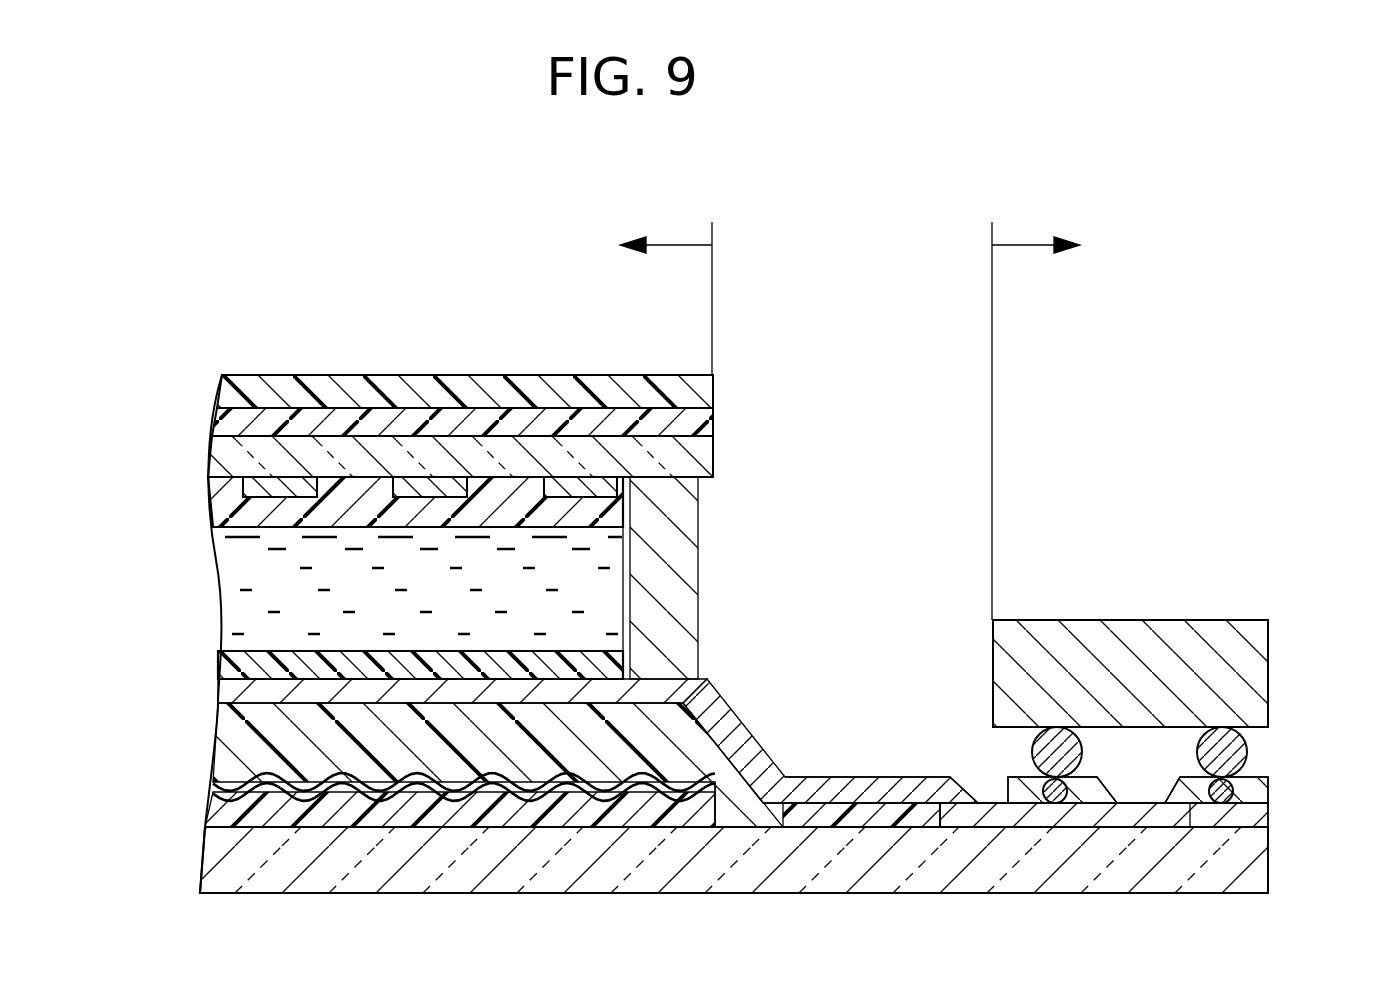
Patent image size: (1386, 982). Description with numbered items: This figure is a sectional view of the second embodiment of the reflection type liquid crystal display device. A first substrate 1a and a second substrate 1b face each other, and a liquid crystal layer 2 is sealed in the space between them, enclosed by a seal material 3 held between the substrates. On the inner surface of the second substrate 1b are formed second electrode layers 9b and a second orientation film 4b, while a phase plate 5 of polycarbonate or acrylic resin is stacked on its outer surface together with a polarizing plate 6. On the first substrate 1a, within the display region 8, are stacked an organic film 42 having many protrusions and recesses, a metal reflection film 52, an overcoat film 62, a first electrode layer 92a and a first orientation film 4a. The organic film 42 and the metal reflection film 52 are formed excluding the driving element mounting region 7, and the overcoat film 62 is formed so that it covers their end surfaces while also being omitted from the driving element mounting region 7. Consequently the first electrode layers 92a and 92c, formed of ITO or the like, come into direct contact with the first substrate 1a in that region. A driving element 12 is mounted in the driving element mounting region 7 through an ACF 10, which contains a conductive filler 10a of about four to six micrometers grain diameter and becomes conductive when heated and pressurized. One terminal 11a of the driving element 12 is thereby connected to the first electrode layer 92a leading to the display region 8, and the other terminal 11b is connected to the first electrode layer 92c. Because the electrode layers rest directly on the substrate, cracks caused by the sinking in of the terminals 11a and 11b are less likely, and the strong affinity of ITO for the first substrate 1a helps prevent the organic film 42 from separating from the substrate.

The first substrate 1a is at (240, 858).
The second substrate 1b is at (228, 462).
The liquid crystal layer 2 is at (248, 590).
The seal material 3 is at (665, 579).
The first orientation film 4a is at (230, 666).
The second orientation film 4b is at (210, 505).
The phase plate 5 is at (228, 424).
The polarizer 6 is at (228, 388).
The driving element mounting region 7 is at (1025, 241).
The display region 8 is at (672, 241).
The second electrode layers 9b is at (288, 487).
The ACF 10 is at (1260, 795).
The conductive filler 10a is at (1046, 789).
The terminal 11a is at (1047, 750).
The terminal 11b is at (1227, 749).
The driving element 12 is at (1140, 597).
The organic film 42 is at (208, 808).
The metal reflection film 52 is at (210, 789).
The overcoat film 62 is at (260, 750).
The first electrode layer 92a is at (240, 692).
The first electrode layer 92c is at (1250, 815).